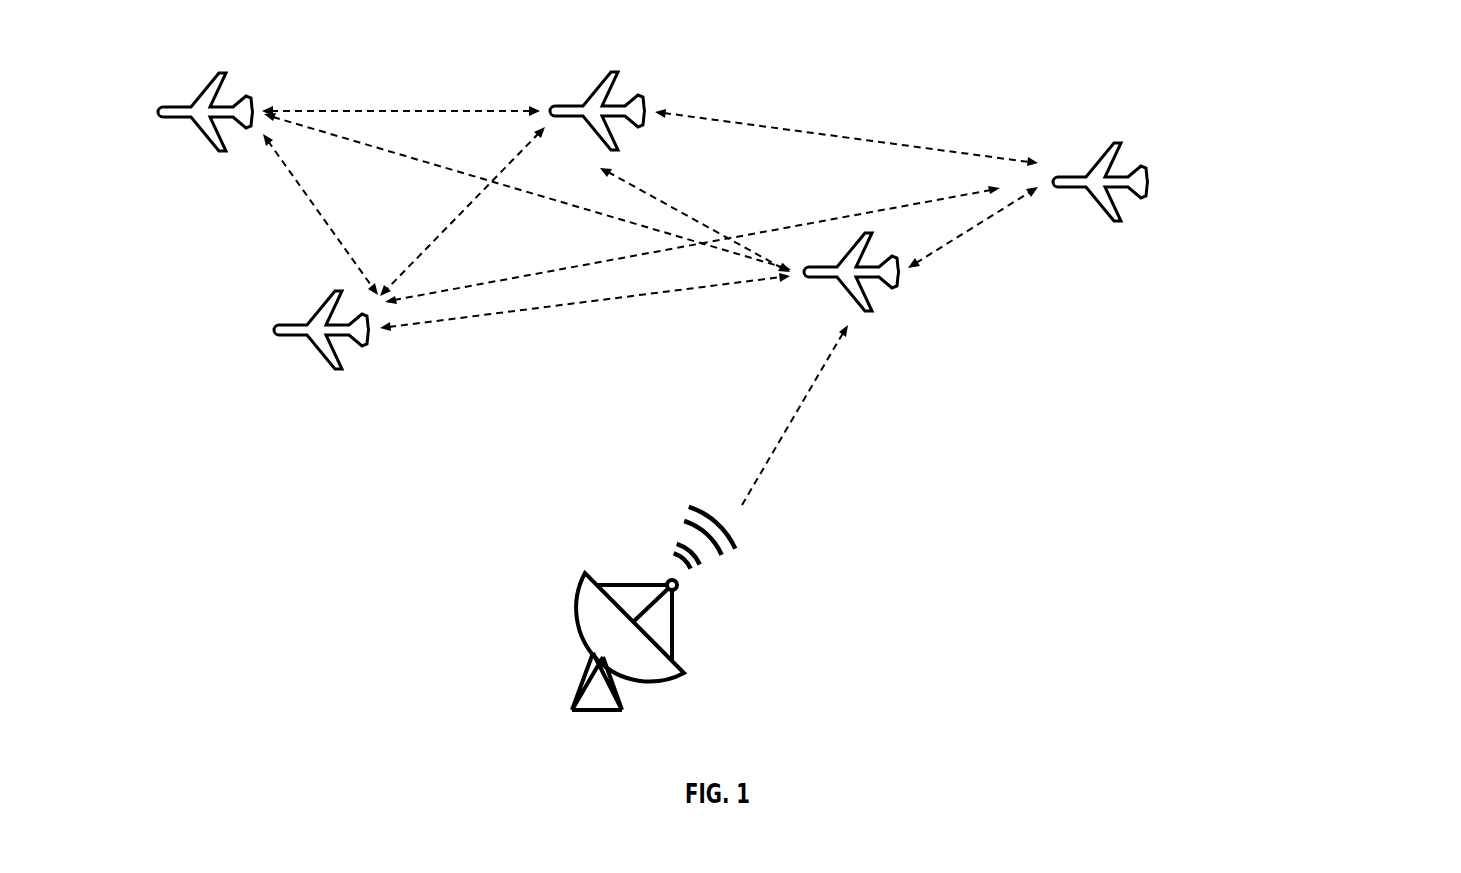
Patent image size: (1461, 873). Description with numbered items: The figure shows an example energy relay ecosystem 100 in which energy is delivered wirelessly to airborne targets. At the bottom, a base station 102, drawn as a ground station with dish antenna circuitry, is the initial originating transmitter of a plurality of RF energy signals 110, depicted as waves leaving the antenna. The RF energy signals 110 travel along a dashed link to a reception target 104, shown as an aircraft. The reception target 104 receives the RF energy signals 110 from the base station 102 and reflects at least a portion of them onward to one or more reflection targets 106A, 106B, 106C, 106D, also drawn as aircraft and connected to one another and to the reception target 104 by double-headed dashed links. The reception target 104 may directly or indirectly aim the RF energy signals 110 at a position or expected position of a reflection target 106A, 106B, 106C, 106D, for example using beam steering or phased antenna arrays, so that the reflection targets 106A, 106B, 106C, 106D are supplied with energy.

The energy relay ecosystem 100 is at (1346, 107).
The base station 102 is at (577, 612).
The reception target 104 is at (852, 235).
The reflection target 106A is at (1147, 184).
The reflection target 106B is at (614, 84).
The reflection target 106C is at (305, 308).
The reflection target 106D is at (193, 89).
The RF energy signals 110 is at (657, 511).